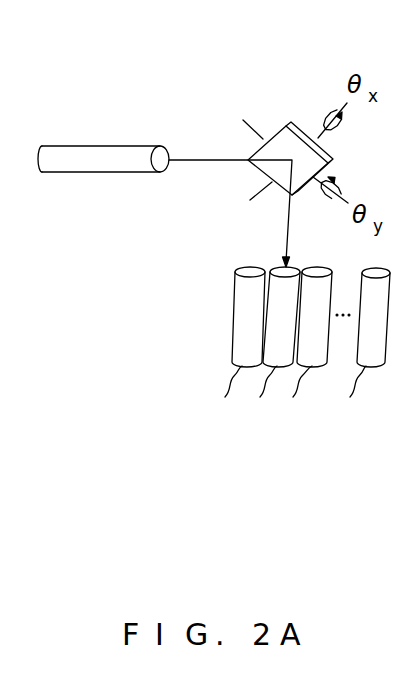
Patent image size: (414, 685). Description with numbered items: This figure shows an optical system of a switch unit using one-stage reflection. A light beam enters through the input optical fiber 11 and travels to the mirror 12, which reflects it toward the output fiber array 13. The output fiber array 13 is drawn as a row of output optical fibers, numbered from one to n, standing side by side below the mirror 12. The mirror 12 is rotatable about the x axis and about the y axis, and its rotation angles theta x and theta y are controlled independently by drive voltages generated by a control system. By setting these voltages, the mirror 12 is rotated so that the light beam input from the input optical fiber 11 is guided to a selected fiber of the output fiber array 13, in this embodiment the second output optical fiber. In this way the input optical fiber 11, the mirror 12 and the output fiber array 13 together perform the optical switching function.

The input optical fiber 11 is at (109, 146).
The mirror 12 is at (328, 148).
The output fiber array 13 is at (233, 312).